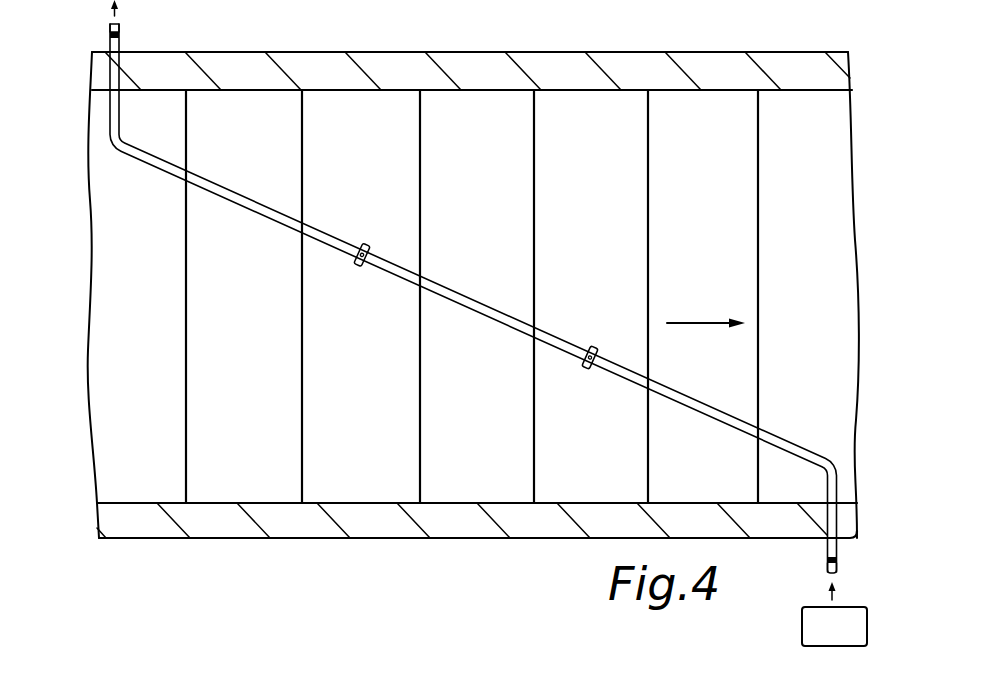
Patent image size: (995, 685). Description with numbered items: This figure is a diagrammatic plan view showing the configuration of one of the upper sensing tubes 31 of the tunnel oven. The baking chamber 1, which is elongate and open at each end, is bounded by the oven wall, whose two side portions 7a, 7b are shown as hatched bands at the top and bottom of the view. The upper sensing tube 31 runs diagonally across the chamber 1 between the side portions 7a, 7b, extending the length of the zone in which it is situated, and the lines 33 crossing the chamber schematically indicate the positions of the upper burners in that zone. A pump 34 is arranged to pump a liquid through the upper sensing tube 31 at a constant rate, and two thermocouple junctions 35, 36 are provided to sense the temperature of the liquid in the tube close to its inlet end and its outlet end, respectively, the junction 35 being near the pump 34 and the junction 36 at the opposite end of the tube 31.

The baking chamber 1 is at (579, 202).
The side portion of the oven wall 7a is at (294, 550).
The side portion of the oven wall 7b is at (610, 39).
The upper sensing tube 31 is at (480, 309).
The lines indicating positions of the upper burners 33 is at (186, 148).
The pump 34 is at (802, 628).
The thermocouple junction 35 is at (838, 558).
The thermocouple junction 36 is at (110, 35).